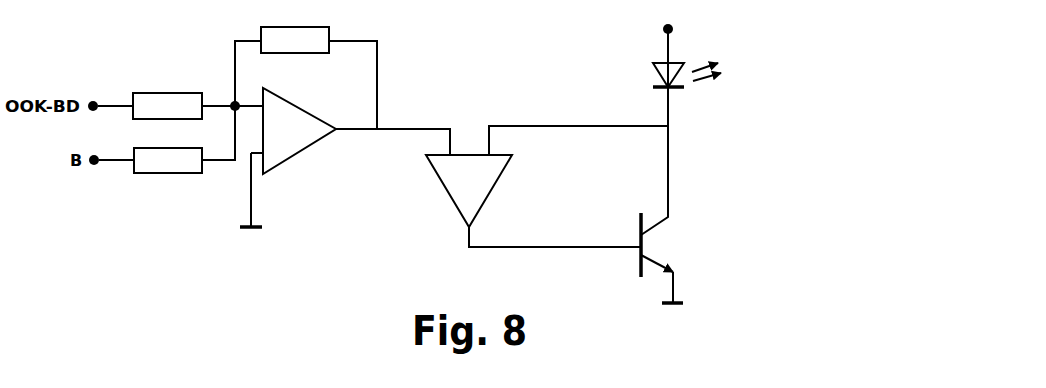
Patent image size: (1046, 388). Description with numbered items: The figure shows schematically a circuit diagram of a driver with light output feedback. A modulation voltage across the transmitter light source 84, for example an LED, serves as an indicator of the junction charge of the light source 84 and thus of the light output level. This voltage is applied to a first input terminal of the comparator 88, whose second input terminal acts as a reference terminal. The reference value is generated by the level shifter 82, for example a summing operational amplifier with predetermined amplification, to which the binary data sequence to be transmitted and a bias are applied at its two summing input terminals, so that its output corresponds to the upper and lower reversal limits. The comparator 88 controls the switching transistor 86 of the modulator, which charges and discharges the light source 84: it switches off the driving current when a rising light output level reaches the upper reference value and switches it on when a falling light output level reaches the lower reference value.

The level shifter 82 is at (292, 195).
The transmitter light source 84 is at (682, 50).
The switching transistor 86 is at (687, 253).
The comparator 88 is at (468, 138).